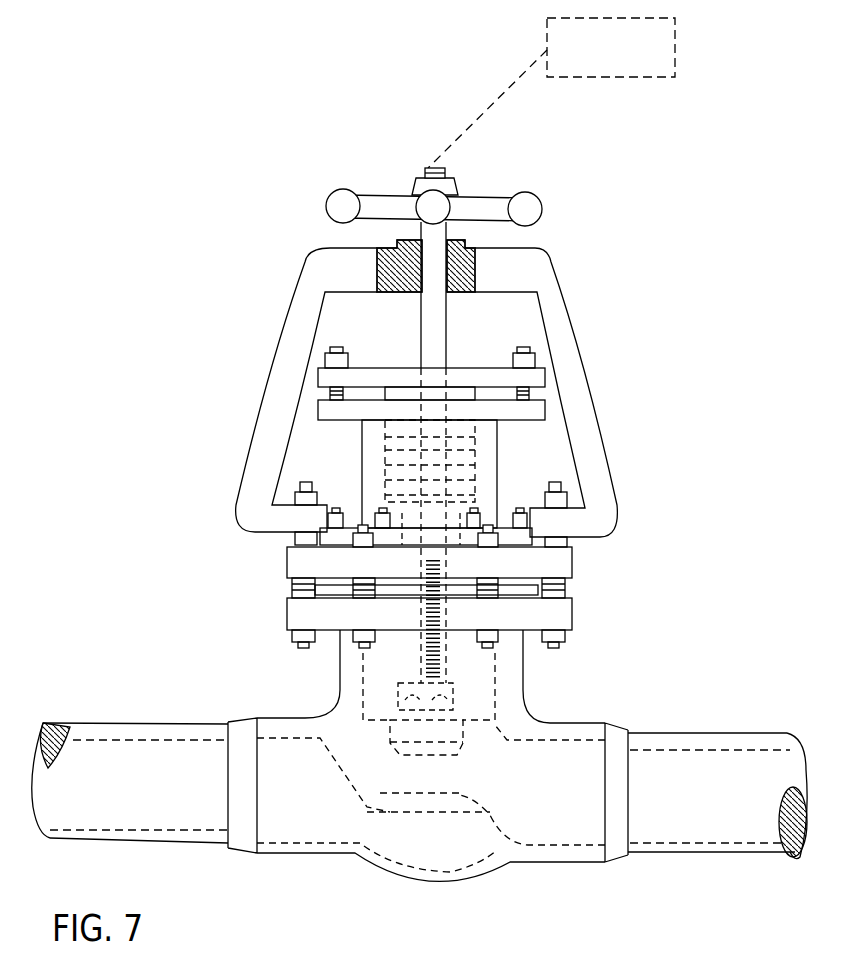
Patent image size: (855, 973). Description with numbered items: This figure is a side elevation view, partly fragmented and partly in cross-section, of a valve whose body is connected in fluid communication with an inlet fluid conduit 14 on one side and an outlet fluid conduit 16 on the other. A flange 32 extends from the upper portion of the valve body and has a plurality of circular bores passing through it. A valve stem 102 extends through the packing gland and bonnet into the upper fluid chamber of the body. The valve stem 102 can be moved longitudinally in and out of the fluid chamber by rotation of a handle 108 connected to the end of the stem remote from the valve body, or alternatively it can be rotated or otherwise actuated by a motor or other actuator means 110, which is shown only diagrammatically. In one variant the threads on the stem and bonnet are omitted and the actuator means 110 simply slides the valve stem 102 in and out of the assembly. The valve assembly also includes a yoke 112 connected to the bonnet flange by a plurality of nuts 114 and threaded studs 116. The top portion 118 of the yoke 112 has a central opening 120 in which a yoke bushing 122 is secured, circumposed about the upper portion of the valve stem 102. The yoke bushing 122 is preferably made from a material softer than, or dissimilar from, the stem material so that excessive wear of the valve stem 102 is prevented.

The inlet fluid conduit 14 is at (100, 730).
The outlet fluid conduit 16 is at (725, 740).
The flange 32 is at (560, 572).
The valve stem 102 is at (437, 346).
The handle 108 is at (528, 205).
The actuator means 110 is at (670, 75).
The yoke 112 is at (583, 353).
The nuts 114 is at (567, 503).
The threaded studs 116 is at (555, 491).
The top portion of yoke 118 is at (530, 248).
The central opening 120 is at (452, 292).
The yoke bushing 122 is at (400, 241).